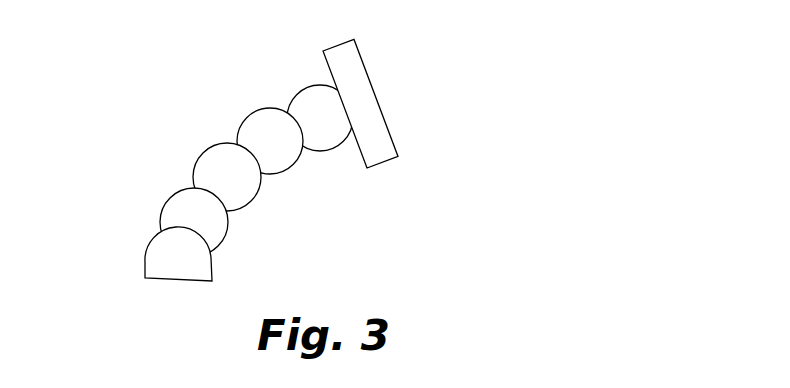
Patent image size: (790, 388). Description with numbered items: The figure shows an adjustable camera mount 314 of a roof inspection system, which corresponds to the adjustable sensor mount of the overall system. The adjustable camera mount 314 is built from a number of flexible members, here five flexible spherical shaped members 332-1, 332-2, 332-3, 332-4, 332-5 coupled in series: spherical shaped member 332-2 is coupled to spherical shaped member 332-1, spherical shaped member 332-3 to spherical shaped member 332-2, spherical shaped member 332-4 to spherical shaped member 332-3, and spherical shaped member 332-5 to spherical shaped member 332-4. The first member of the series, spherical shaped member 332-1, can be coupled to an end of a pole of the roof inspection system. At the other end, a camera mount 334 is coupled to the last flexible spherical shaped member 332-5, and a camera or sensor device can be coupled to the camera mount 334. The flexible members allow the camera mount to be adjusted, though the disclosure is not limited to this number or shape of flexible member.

The adjustable camera mount 314 is at (424, 46).
The spherical shaped member 332-1 is at (156, 258).
The spherical shaped member 332-2 is at (173, 206).
The spherical shaped member 332-3 is at (210, 158).
The spherical shaped member 332-4 is at (248, 127).
The spherical shaped member 332-5 is at (302, 96).
The camera mount 334 is at (365, 103).